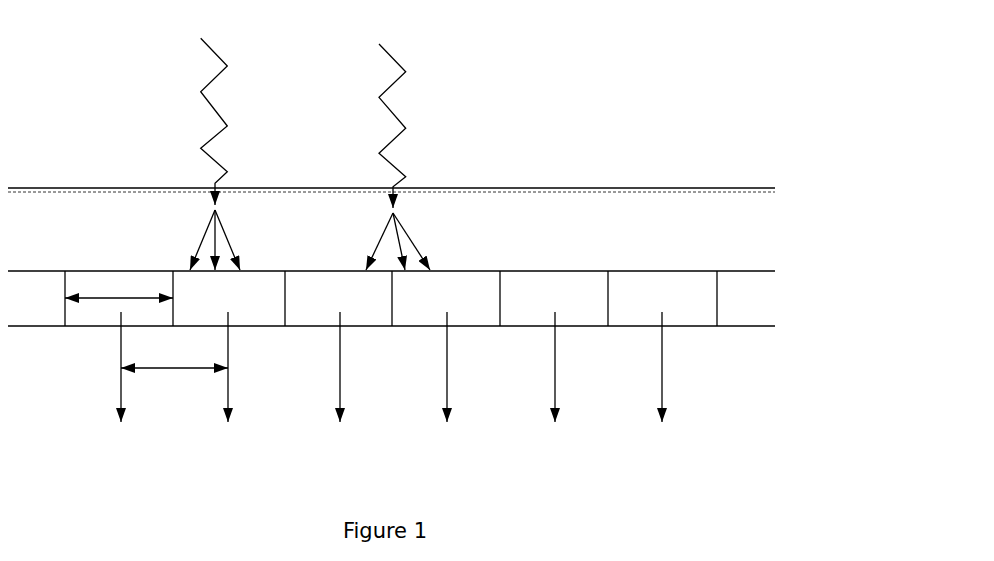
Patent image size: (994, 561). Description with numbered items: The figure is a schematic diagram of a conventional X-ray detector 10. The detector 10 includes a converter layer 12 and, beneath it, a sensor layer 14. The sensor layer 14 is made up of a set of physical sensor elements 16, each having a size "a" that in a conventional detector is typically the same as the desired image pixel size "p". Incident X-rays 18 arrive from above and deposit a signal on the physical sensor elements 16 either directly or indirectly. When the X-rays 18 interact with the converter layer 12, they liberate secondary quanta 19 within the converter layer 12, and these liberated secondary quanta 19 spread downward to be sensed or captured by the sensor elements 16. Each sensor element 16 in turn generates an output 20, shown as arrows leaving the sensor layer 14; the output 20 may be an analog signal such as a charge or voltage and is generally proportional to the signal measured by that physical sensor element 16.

The detector 10 is at (631, 113).
The converter layer 12 is at (746, 232).
The sensor layer 14 is at (417, 333).
The physical sensor elements 16 is at (690, 313).
The incident X-rays 18 is at (406, 72).
The secondary quanta 19 is at (227, 225).
The output 20 is at (118, 386).